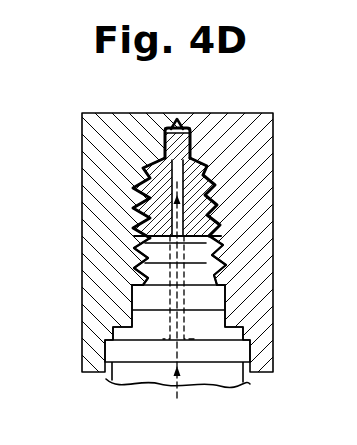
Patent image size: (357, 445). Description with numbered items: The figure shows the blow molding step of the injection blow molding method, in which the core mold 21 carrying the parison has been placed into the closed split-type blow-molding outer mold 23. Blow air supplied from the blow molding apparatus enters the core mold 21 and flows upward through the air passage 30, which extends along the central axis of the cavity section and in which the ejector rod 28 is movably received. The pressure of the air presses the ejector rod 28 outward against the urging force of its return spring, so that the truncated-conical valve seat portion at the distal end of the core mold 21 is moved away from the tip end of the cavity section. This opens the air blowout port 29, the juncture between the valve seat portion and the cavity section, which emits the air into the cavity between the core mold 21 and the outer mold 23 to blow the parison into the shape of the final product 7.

The final product 7 is at (228, 185).
The core mold 21 is at (134, 303).
The blow-molding outer mold 23 is at (98, 236).
The ejector rod 28 is at (166, 146).
The air blowout port 29 is at (193, 160).
The air passage 30 is at (216, 214).